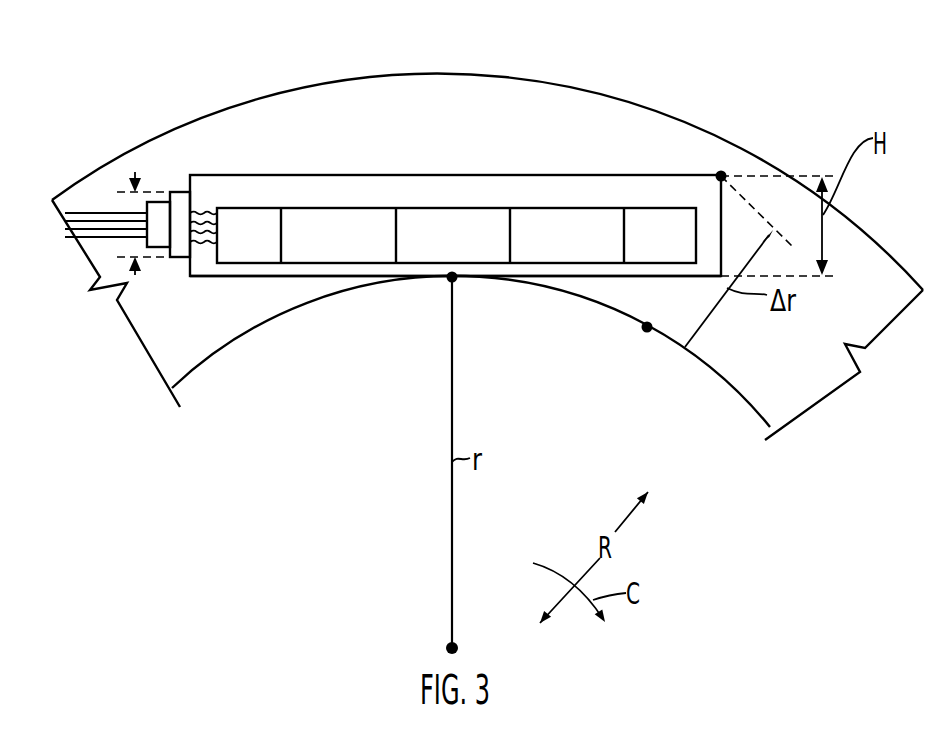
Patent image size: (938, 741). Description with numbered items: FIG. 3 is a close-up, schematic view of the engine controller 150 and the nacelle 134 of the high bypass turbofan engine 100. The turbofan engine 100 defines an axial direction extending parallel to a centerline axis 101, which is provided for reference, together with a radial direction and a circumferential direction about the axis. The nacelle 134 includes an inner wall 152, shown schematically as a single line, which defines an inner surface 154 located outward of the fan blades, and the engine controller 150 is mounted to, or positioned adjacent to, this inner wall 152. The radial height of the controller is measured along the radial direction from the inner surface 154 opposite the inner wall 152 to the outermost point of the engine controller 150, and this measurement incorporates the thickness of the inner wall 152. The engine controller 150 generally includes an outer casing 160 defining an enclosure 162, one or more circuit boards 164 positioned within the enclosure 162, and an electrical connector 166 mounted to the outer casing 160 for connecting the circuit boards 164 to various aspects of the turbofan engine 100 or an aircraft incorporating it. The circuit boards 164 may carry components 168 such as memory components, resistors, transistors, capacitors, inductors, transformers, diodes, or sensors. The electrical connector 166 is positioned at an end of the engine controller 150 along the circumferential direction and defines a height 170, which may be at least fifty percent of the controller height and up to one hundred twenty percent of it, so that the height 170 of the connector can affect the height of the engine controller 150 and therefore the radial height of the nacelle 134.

The turbofan engine 100 is at (752, 40).
The centerline axis 101 is at (452, 648).
The nacelle 134 is at (858, 245).
The engine controller 150 is at (550, 103).
The inner wall 152 is at (256, 327).
The inner surface 154 is at (350, 300).
The outer casing 160 is at (382, 177).
The enclosure 162 is at (405, 170).
The circuit board 164 is at (536, 286).
The electrical connector 166 is at (177, 200).
The components 168 is at (534, 225).
The height 170 is at (130, 172).